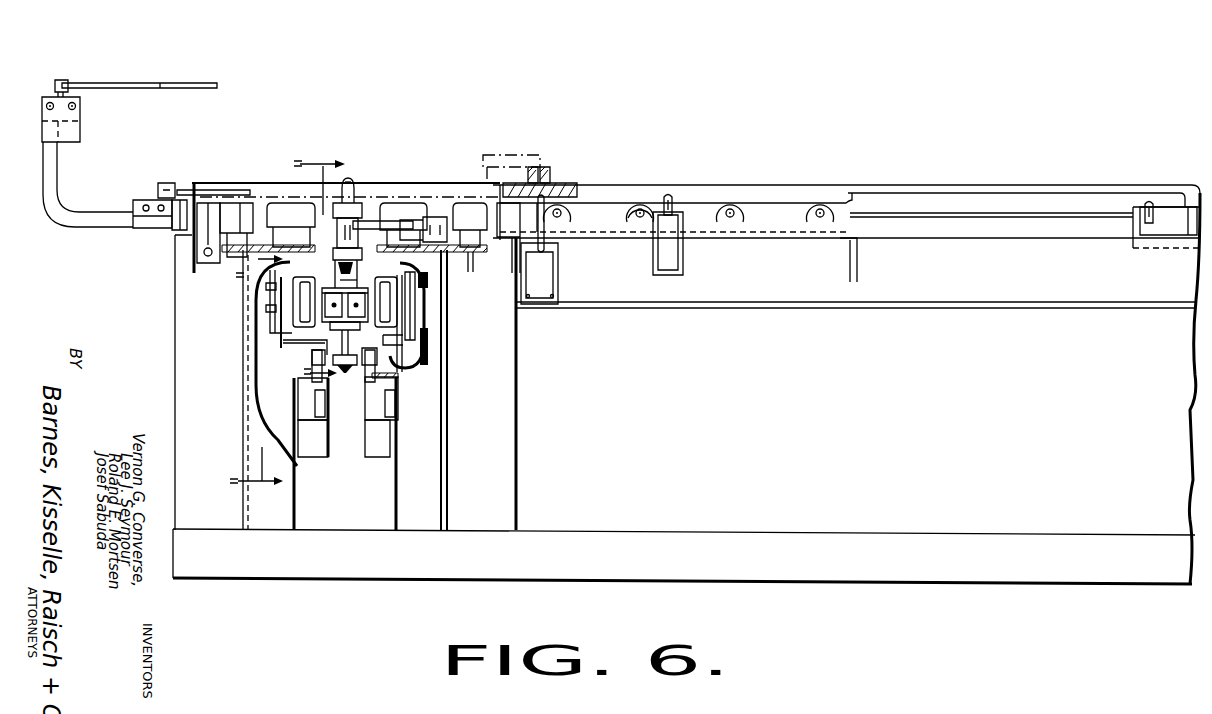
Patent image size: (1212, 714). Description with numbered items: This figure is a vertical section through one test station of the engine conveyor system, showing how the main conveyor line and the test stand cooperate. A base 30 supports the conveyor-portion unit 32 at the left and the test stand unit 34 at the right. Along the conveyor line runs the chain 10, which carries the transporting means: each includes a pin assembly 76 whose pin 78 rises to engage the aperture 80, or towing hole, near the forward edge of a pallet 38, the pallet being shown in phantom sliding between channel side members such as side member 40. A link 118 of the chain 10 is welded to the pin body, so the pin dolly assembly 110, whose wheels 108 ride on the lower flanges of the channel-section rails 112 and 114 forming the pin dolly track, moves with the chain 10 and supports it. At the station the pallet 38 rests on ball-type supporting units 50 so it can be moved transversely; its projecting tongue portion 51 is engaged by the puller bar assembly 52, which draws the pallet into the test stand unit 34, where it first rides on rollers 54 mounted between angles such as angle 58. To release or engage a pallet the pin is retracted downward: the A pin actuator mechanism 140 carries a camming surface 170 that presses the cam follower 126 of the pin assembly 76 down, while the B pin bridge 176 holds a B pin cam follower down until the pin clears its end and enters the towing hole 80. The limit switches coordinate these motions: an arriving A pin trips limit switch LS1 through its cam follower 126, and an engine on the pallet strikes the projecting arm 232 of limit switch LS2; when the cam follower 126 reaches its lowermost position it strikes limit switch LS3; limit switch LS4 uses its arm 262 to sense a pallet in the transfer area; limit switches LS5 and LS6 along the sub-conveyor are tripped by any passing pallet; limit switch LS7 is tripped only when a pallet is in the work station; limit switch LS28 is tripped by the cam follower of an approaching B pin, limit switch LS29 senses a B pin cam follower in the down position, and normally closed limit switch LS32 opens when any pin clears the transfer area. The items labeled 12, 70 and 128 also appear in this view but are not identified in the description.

The chain 10 is at (329, 270).
The section line 12 is at (239, 383).
The base 30 is at (368, 563).
The conveyor-portion unit 32 is at (148, 308).
The test stand unit 34 is at (890, 185).
The pallet 38 is at (378, 180).
The channel side member 40 is at (183, 198).
The ball-type supporting unit 50 is at (291, 205).
The projecting tongue portion 51 is at (548, 168).
The puller bar assembly 52 is at (556, 184).
The roller 54 is at (642, 203).
The angle 58 is at (767, 210).
The member 70 is at (385, 262).
The pin assembly 76 is at (291, 225).
The pin 78 is at (363, 206).
The aperture (towing hole) 80 is at (347, 180).
The wheel 108 is at (400, 286).
The pin dolly assembly 110 is at (364, 256).
The channel-section rail 112 is at (400, 300).
The channel-section rail 114 is at (300, 297).
The chain link 118 is at (345, 259).
The cam follower 126 is at (330, 355).
The cable 128 is at (430, 311).
The actuator mechanism 140 is at (268, 332).
The camming surface 170 is at (428, 340).
The B pin bridge 176 is at (400, 371).
The projecting arm 232 is at (172, 82).
The arm 262 is at (213, 190).
The limit switch LS1 is at (300, 394).
The limit switch LS2 is at (53, 82).
The limit switch LS3 is at (305, 432).
The limit switch LS4 is at (151, 200).
The limit switch LS5 is at (537, 277).
The limit switch LS6 is at (673, 252).
The limit switch LS7 is at (1168, 232).
The limit switch LS28 is at (405, 389).
The limit switch LS29 is at (380, 428).
The limit switch LS32 is at (436, 217).